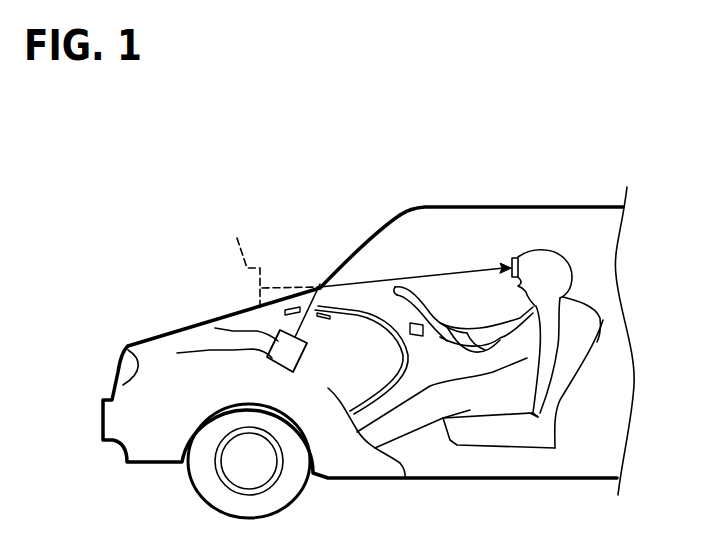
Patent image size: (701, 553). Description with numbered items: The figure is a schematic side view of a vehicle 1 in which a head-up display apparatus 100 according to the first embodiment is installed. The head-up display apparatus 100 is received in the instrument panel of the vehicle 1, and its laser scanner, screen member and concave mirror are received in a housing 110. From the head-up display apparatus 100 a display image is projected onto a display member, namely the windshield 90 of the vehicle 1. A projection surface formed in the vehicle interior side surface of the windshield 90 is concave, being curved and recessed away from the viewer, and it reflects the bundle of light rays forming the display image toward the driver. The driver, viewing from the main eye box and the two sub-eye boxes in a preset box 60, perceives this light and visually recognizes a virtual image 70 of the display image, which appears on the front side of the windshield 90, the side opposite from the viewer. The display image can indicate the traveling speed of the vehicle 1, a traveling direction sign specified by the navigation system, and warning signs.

The vehicle 1 is at (582, 206).
The preset box 60 is at (514, 258).
The virtual image 70 is at (269, 262).
The windshield 90 is at (357, 248).
The head-up display apparatus 100 is at (215, 328).
The housing 110 is at (177, 353).